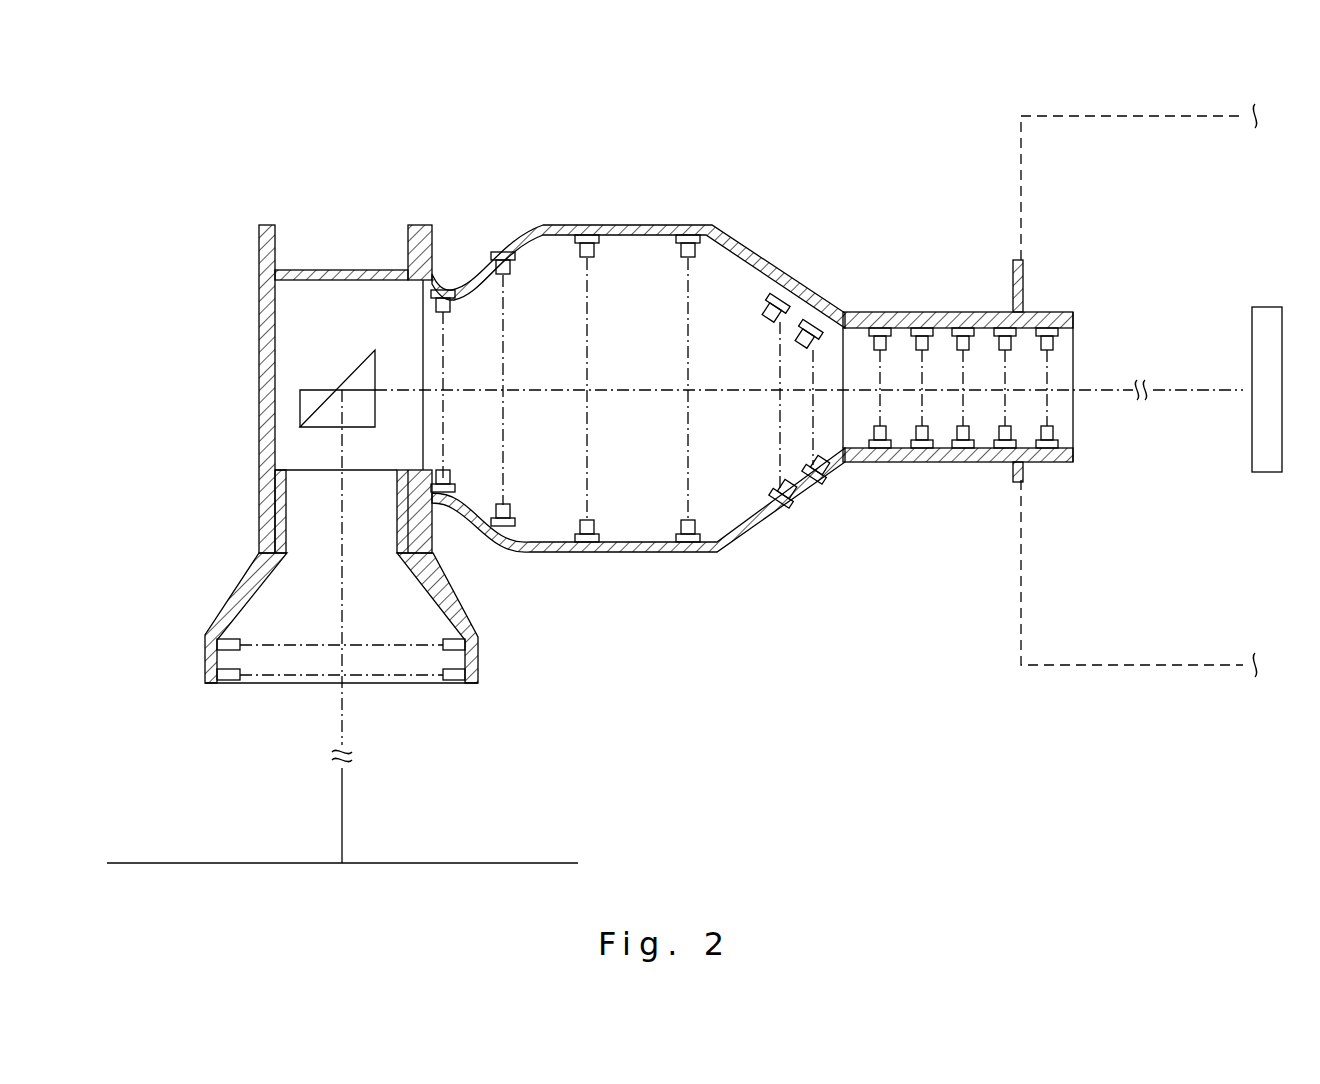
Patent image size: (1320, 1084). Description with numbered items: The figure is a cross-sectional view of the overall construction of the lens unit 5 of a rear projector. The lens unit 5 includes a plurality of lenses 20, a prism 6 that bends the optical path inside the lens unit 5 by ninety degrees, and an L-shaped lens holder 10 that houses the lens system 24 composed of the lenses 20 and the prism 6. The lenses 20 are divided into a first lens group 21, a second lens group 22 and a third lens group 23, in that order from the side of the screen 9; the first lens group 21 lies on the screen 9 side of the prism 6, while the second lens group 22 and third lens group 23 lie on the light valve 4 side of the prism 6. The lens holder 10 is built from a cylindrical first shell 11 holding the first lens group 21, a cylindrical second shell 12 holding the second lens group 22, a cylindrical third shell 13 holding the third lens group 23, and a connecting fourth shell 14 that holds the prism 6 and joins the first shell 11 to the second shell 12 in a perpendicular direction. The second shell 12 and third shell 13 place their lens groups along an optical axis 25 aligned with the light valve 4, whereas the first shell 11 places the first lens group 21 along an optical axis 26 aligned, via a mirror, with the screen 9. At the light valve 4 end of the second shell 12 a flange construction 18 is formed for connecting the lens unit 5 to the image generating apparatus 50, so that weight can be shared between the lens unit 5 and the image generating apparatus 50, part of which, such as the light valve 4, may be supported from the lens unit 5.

The light valve 4 is at (1268, 475).
The lens unit 5 is at (900, 545).
The prism 6 is at (310, 430).
The screen 9 is at (523, 863).
The lens holder 10 is at (783, 250).
The first shell 11 is at (228, 597).
The second shell 12 is at (660, 555).
The third shell 13 is at (1065, 325).
The fourth shell 14 is at (265, 362).
The flange construction 18 is at (1018, 258).
The lenses 20 is at (443, 290).
The first lens group 21 is at (440, 690).
The second lens group 22 is at (603, 516).
The third lens group 23 is at (980, 432).
The lens system 24 is at (403, 323).
The optical axis 25 is at (1185, 385).
The optical axis 26 is at (345, 815).
The image generating apparatus 50 is at (1108, 135).